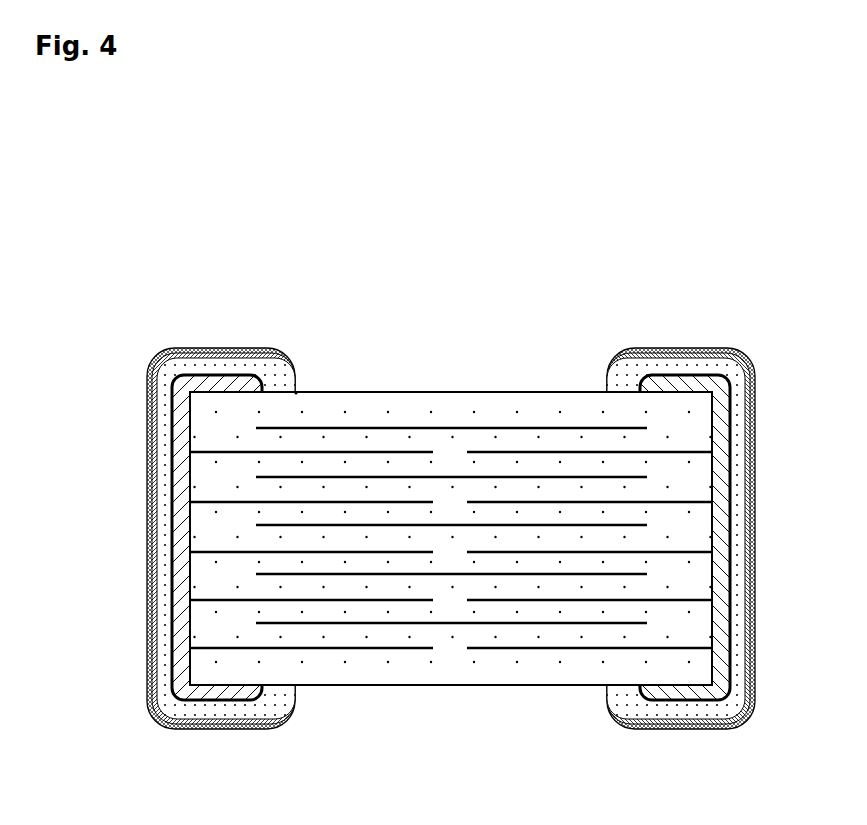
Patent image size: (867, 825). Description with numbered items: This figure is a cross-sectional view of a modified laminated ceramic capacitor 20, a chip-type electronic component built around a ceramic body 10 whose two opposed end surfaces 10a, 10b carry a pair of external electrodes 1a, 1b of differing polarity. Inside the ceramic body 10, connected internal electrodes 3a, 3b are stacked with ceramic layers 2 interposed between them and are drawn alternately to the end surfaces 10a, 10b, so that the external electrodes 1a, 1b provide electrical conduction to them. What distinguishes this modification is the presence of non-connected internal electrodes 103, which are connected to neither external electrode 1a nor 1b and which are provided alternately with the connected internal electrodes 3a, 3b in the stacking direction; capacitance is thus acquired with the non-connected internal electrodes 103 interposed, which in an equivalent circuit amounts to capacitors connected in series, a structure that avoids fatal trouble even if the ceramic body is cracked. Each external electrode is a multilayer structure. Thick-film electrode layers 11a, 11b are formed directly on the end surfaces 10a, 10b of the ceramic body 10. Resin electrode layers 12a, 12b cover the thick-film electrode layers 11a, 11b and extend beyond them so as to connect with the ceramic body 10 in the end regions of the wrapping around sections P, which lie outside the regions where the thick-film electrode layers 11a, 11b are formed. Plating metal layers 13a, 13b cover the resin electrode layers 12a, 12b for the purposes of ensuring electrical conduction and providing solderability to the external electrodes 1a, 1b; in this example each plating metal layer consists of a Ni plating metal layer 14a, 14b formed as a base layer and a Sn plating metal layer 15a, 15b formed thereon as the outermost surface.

The laminated ceramic capacitor 20 is at (582, 332).
The ceramic body 10 is at (523, 367).
The ceramic layers 2 is at (398, 610).
The internal electrode 3a is at (422, 500).
The internal electrode 3b is at (498, 552).
The non-connected internal electrodes 103 is at (505, 477).
The external electrode 1a is at (150, 360).
The external electrode 1b is at (755, 362).
The end surface 10a is at (183, 397).
The end surface 10b is at (720, 403).
The thick-film electrode layer 11a is at (173, 470).
The thick-film electrode layer 11b is at (730, 463).
The resin electrode layer 12a is at (157, 527).
The resin electrode layer 12b is at (753, 532).
The plating metal layer 13a is at (147, 743).
The plating metal layer 13b is at (750, 228).
The Ni plating metal layer 14a is at (222, 712).
The Ni plating metal layer 14b is at (667, 360).
The Sn plating metal layer 15a is at (242, 730).
The Sn plating metal layer 15b is at (695, 353).
The end regions of wrapping around sections P is at (296, 395).